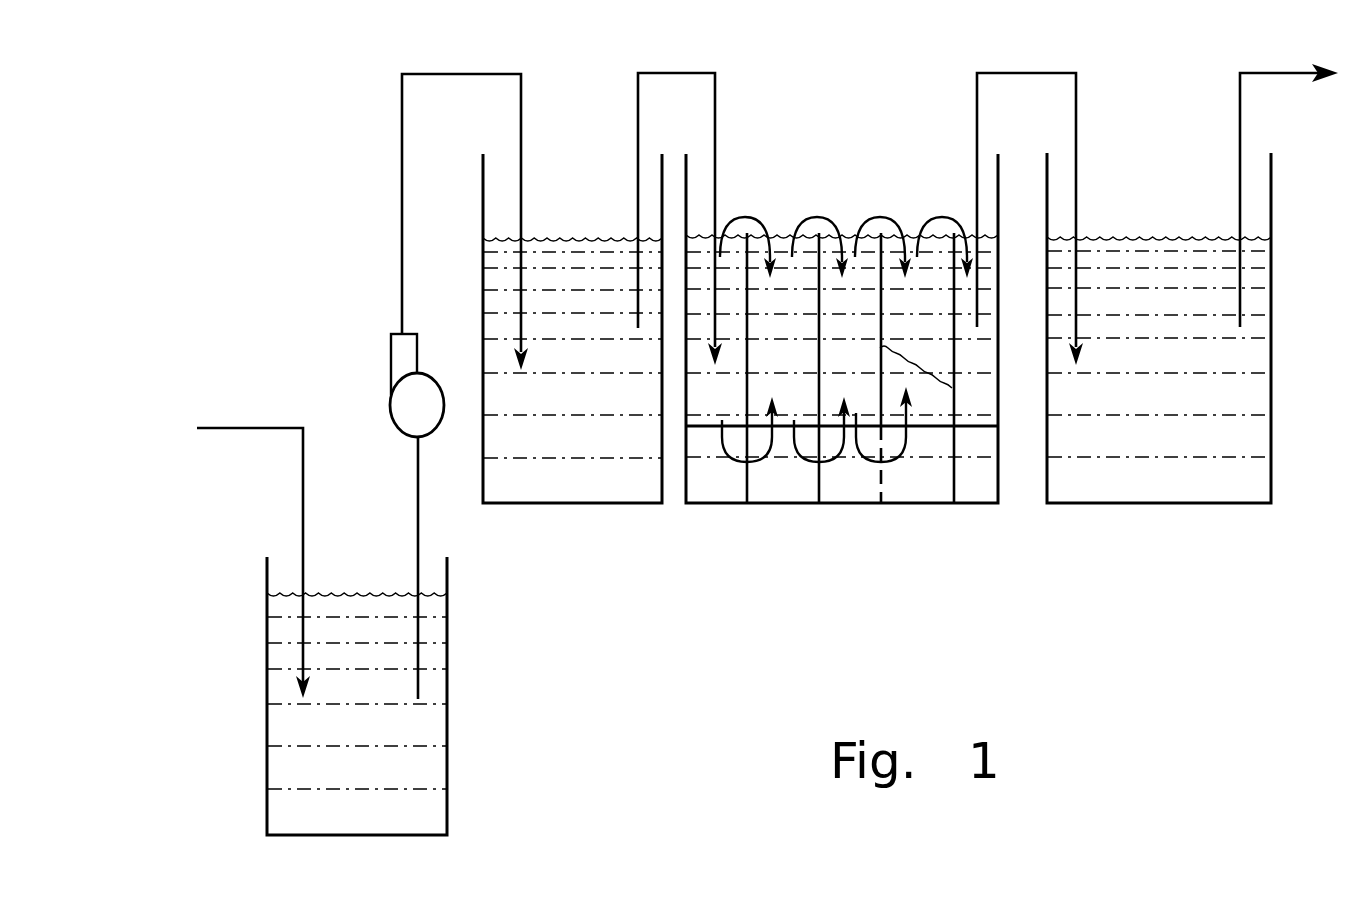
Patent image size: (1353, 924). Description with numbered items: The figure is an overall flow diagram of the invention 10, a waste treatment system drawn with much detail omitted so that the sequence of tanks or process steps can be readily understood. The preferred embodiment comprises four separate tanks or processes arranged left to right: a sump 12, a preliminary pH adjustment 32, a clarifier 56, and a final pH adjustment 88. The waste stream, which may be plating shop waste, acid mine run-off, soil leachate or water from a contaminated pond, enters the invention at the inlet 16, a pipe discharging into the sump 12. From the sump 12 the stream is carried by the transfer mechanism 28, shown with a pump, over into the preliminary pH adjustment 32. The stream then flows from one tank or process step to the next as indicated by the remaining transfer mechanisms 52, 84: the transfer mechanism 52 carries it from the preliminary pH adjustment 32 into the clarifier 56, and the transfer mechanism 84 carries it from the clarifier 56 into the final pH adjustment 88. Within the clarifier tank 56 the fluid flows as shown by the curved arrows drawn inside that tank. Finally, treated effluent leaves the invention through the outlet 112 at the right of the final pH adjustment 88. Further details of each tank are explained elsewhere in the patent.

The invention 10 is at (284, 173).
The sump 12 is at (475, 719).
The waste stream inlet 16 is at (237, 428).
The transfer mechanism 28 is at (402, 100).
The preliminary pH adjustment 32 is at (568, 518).
The transfer mechanism 52 is at (672, 73).
The clarifier 56 is at (831, 197).
The transfer mechanism 84 is at (1020, 73).
The final pH adjustment 88 is at (1146, 515).
The treated effluent outlet 112 is at (1285, 78).